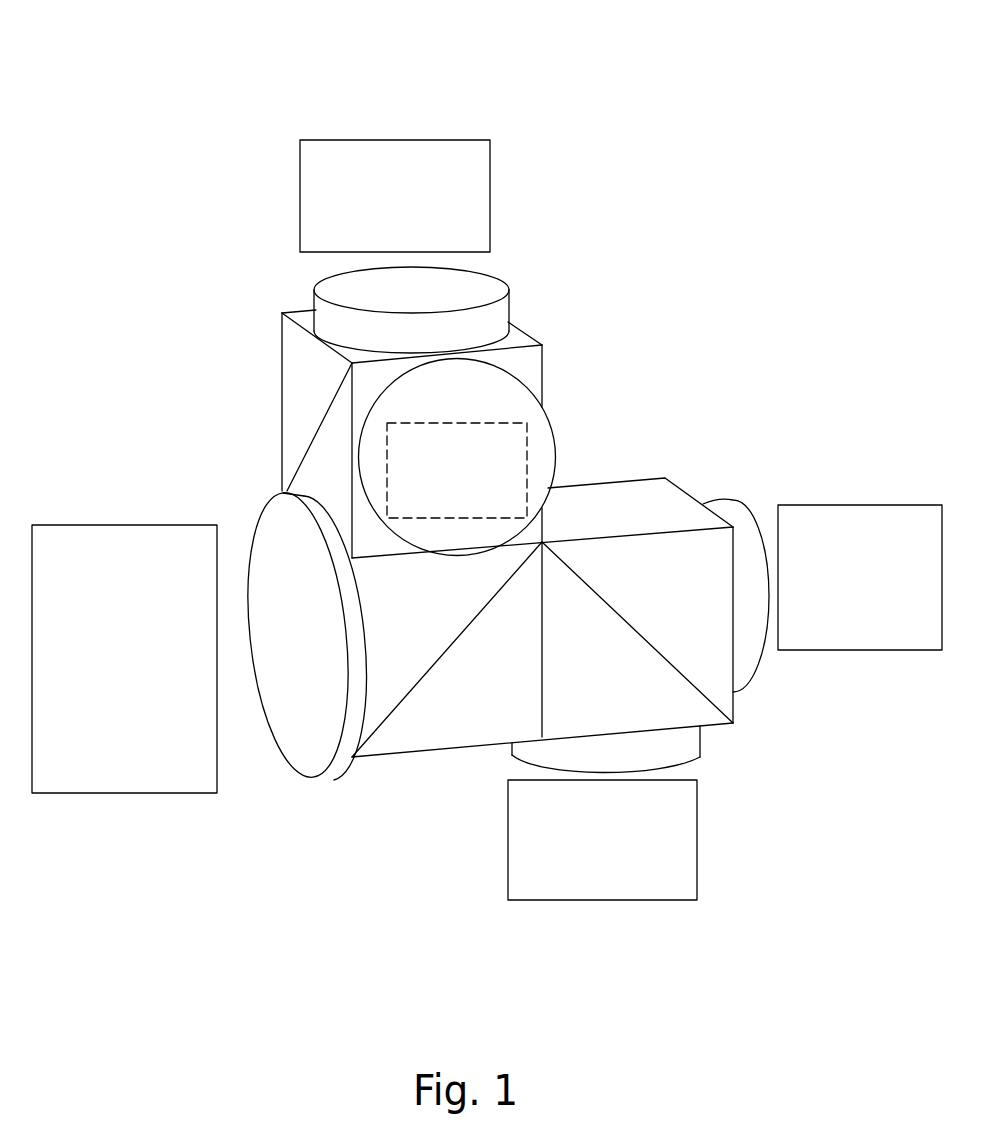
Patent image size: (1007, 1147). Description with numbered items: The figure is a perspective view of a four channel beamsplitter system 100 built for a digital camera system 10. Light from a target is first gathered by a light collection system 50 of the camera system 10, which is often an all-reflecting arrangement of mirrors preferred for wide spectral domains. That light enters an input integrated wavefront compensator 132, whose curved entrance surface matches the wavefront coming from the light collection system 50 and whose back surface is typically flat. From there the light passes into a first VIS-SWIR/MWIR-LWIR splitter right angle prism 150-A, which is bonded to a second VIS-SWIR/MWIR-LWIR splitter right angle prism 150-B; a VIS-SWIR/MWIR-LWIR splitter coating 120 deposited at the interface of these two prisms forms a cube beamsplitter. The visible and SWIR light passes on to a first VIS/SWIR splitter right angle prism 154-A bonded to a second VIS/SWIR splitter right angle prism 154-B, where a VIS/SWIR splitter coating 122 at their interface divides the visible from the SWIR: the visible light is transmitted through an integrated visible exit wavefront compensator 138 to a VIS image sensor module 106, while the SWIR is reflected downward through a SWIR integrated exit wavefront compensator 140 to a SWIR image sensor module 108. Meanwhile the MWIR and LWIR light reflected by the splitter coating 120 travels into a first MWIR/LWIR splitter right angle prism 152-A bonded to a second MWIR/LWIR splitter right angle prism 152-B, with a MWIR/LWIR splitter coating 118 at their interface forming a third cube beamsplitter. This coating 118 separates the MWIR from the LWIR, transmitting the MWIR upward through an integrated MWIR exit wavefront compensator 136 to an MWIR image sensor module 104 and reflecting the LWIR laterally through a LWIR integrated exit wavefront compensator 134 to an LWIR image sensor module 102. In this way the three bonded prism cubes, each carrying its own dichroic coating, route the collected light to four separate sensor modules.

The digital camera system 10 is at (193, 78).
The light collection system 50 is at (138, 699).
The channel beamsplitter system 100 is at (540, 320).
The LWIR image sensor module 102 is at (520, 512).
The MWIR image sensor module 104 is at (415, 237).
The VIS image sensor module 106 is at (880, 631).
The SWIR image sensor module 108 is at (623, 881).
The MWIR/LWIR splitter coating 118 is at (313, 430).
The VIS-SWIR/MWIR-LWIR splitter coating 120 is at (433, 677).
The VIS/SWIR splitter coating 122 is at (722, 707).
The input integrated wavefront compensator 132 is at (275, 517).
The LWIR integrated exit wavefront compensator 134 is at (512, 392).
The integrated MWIR exit wavefront compensator 136 is at (333, 282).
The integrated visible exit wavefront compensator 138 is at (747, 535).
The SWIR integrated exit wavefront compensator 140 is at (512, 755).
The first VIS-SWIR/MWIR-LWIR splitter right angle prism 150-A is at (368, 697).
The second VIS-SWIR/MWIR-LWIR splitter right angle prism 150-B is at (390, 752).
The first MWIR/LWIR splitter right angle prism 152-A is at (542, 353).
The second MWIR/LWIR splitter right angle prism 152-B is at (527, 340).
The first VIS/SWIR splitter right angle prism 154-A is at (688, 717).
The second VIS/SWIR splitter right angle prism 154-B is at (665, 542).